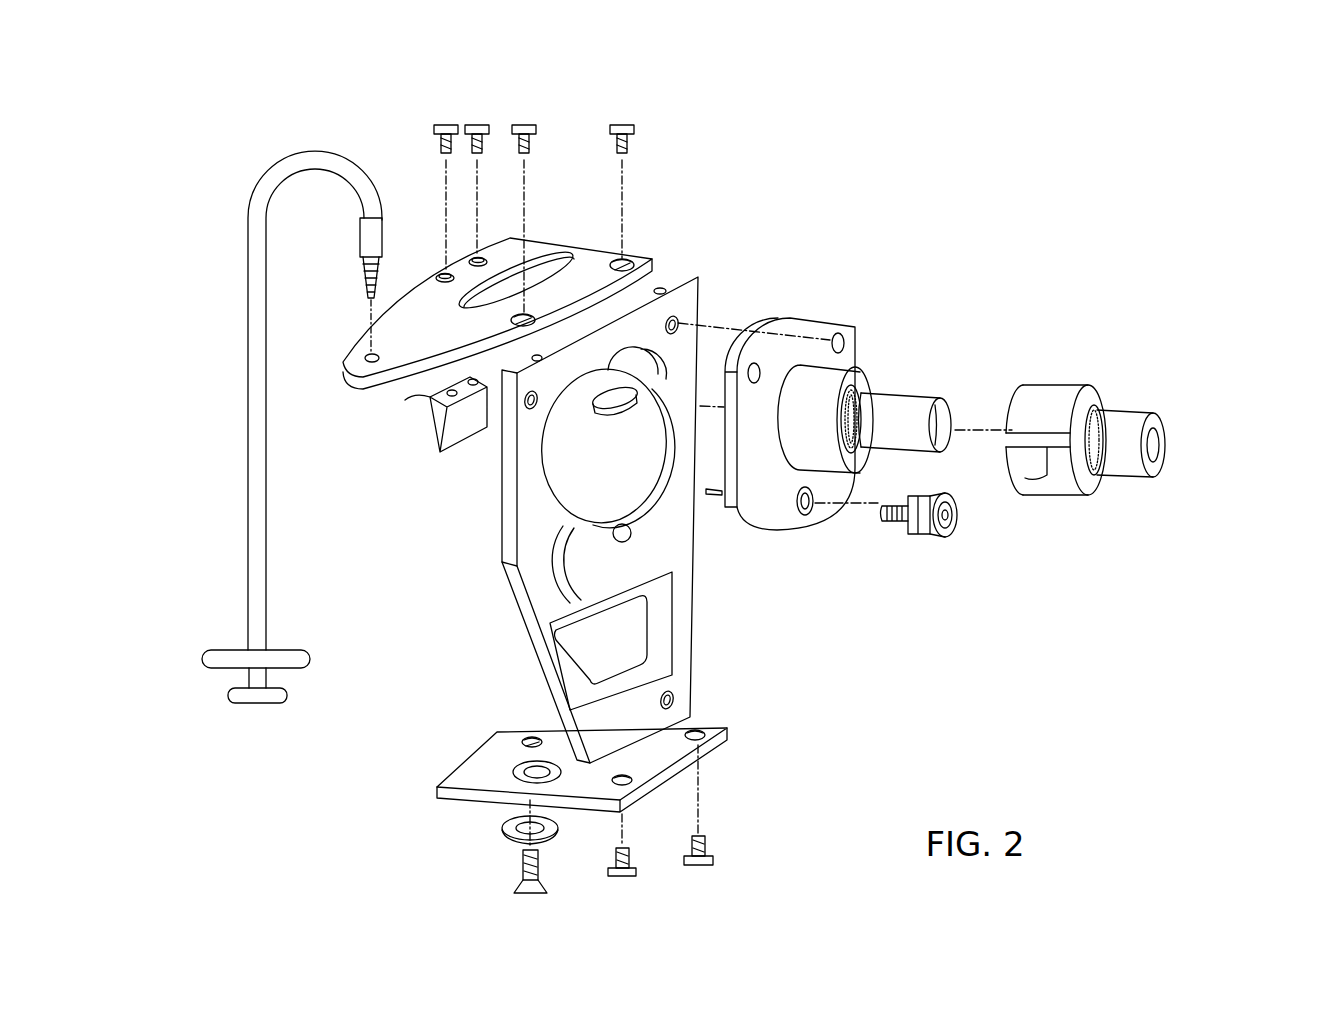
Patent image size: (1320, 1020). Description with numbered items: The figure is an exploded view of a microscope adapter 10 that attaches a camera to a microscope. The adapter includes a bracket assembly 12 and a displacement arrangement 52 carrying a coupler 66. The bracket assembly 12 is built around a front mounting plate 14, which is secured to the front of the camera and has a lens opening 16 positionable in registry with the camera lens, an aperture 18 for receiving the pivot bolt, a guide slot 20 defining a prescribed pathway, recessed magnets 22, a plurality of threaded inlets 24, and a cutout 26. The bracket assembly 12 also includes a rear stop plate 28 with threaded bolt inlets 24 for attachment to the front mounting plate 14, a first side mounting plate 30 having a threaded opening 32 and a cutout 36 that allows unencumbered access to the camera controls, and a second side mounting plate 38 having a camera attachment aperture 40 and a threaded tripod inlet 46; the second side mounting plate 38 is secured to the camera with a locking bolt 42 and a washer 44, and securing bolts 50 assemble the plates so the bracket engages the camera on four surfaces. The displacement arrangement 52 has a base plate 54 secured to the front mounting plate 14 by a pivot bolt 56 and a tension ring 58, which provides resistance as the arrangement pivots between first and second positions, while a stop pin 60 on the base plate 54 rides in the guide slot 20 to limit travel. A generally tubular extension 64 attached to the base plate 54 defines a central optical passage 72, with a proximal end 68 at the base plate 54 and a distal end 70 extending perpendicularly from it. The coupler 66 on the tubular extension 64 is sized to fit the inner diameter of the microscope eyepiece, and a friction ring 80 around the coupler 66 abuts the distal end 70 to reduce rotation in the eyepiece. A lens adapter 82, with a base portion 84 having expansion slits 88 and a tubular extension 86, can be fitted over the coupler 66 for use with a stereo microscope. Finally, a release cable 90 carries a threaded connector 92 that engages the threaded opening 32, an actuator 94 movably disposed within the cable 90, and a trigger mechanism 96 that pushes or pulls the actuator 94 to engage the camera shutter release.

The microscope adapter 10 is at (1127, 714).
The bracket assembly 12 is at (772, 181).
The front mounting plate 14 is at (496, 500).
The lens opening 16 is at (580, 482).
The aperture 18 is at (552, 567).
The guide slot 20 is at (613, 541).
The magnets 22 is at (680, 322).
The threaded inlets 24 is at (478, 258).
The cutout 26 is at (553, 612).
The rear stop plate 28 is at (428, 438).
The first side mounting plate 30 is at (514, 228).
The threaded opening 32 is at (370, 356).
The cutout 36 is at (540, 270).
The second side mounting plate 38 is at (660, 796).
The camera attachment aperture 40 is at (512, 772).
The locking bolt 42 is at (520, 880).
The washer 44 is at (503, 830).
The threaded tripod inlet 46 is at (520, 742).
The securing bolts 50 is at (622, 125).
The displacement arrangement 52 is at (942, 248).
The base plate 54 is at (840, 310).
The pivot bolt 56 is at (953, 536).
The tension ring 58 is at (920, 538).
The stop pin 60 is at (712, 497).
The tubular extension 64 is at (845, 370).
The coupler 66 is at (936, 390).
The proximal end 68 is at (870, 392).
The distal end 70 is at (935, 447).
The optical passage 72 is at (958, 416).
The friction ring 80 is at (862, 395).
The lens adapter 82 is at (1190, 322).
The base portion 84 is at (1060, 386).
The tubular extension 86 is at (1140, 414).
The expansion slits 88 is at (1048, 478).
The cable 90 is at (298, 168).
The threaded connector 92 is at (365, 272).
The actuator 94 is at (375, 297).
The trigger mechanism 96 is at (238, 704).